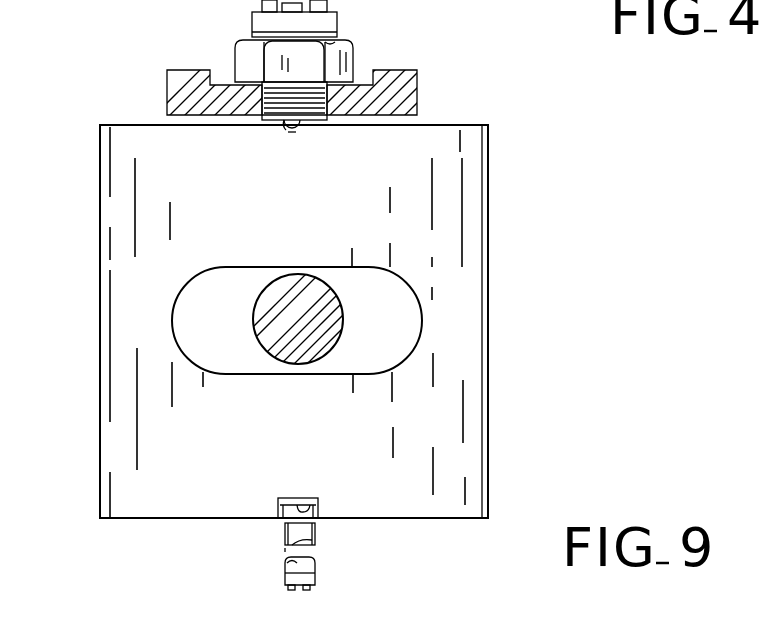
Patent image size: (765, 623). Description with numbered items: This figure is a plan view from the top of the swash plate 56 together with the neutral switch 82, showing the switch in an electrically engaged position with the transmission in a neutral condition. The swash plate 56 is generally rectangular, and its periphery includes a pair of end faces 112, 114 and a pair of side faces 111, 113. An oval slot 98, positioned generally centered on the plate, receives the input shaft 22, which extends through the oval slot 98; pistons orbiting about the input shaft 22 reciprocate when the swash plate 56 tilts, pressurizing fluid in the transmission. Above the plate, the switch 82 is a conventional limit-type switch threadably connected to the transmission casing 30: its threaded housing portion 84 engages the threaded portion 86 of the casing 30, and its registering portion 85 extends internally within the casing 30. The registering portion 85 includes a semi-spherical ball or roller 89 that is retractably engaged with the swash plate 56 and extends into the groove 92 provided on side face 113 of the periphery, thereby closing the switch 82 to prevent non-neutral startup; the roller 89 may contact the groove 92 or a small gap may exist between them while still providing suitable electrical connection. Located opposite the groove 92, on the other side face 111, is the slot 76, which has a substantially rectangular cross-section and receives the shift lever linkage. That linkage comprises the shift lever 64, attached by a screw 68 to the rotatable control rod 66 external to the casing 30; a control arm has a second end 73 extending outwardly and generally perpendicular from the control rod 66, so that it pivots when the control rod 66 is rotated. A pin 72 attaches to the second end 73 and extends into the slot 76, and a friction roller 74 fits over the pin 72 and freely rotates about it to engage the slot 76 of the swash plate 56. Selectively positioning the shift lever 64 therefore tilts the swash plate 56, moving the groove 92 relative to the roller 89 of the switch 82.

The input shaft 22 is at (318, 284).
The transmission casing 30 is at (415, 80).
The swash plate 56 is at (475, 258).
The shift lever 64 is at (313, 575).
The control rod 66 is at (283, 540).
The screw 68 is at (310, 588).
The pin 72 is at (320, 124).
The second end 73 is at (283, 530).
The friction roller 74 is at (282, 513).
The slot 76 is at (308, 507).
The switch 82 is at (340, 43).
The threaded housing portion 84 is at (282, 93).
The registering portion 85 is at (290, 146).
The threaded portion 86 is at (310, 73).
The roller 89 is at (300, 130).
The groove 92 is at (278, 127).
The oval slot 98 is at (408, 354).
The side face 111 is at (397, 520).
The end face 112 is at (100, 320).
The side face 113 is at (120, 126).
The end face 114 is at (488, 307).